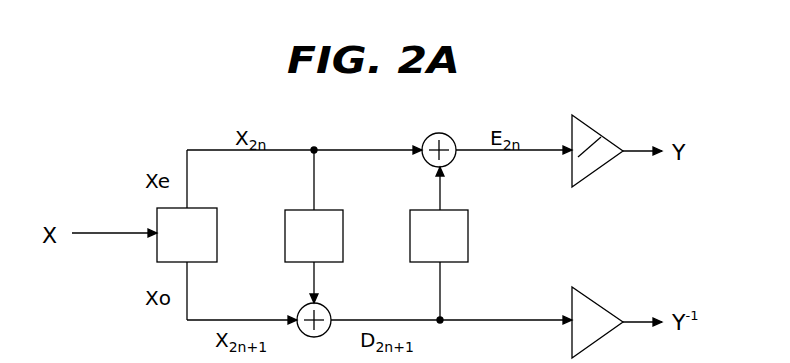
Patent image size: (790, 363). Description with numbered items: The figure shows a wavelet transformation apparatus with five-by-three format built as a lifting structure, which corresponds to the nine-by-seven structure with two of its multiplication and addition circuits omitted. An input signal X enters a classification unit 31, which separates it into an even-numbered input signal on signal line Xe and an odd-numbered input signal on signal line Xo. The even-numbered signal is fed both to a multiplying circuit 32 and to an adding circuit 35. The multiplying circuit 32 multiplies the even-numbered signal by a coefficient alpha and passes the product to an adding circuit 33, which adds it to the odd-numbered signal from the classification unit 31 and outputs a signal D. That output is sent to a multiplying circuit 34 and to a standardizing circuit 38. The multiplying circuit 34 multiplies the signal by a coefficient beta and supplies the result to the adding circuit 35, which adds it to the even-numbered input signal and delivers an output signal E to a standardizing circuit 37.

The classification unit 31 is at (203, 208).
The multiplying circuit 32 is at (328, 210).
The adding circuit 33 is at (329, 311).
The multiplying circuit 34 is at (455, 210).
The adding circuit 35 is at (439, 133).
The standardizing circuit 37 is at (594, 128).
The standardizing circuit 38 is at (594, 299).